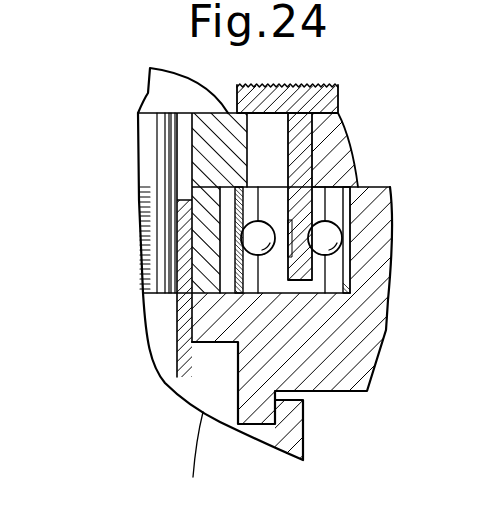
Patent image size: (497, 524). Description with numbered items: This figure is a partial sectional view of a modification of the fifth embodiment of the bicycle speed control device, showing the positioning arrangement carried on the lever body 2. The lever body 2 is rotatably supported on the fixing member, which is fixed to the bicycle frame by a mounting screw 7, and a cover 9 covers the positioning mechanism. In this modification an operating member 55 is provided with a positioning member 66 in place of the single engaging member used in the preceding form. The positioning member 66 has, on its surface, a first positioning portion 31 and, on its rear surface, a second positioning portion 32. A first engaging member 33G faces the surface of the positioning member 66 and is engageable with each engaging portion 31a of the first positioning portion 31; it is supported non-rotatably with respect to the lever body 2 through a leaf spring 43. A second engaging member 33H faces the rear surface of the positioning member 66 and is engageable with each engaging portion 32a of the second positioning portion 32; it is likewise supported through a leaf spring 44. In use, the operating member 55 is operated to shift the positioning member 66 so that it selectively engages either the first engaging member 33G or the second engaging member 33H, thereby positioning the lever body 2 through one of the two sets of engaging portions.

The lever body 2 is at (372, 356).
The mounting screw 7 is at (147, 161).
The cover 9 is at (348, 143).
The first positioning portion 31 is at (352, 247).
The engaging portion 31a is at (352, 285).
The second positioning portion 32 is at (182, 302).
The engaging portion 32a is at (288, 244).
The first engaging member 33G is at (348, 221).
The second engaging member 33H is at (256, 238).
The leaf spring 43 is at (330, 237).
The leaf spring 44 is at (165, 220).
The operating member 55 is at (339, 85).
The positioning member 66 is at (312, 178).